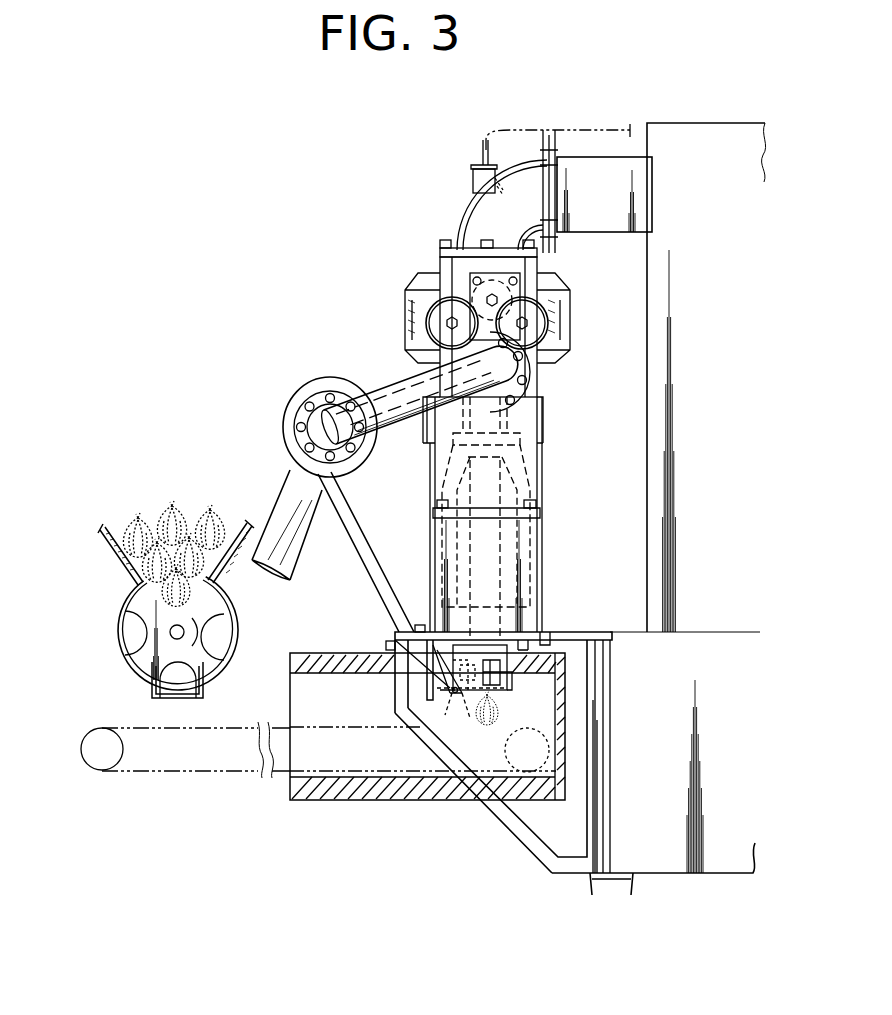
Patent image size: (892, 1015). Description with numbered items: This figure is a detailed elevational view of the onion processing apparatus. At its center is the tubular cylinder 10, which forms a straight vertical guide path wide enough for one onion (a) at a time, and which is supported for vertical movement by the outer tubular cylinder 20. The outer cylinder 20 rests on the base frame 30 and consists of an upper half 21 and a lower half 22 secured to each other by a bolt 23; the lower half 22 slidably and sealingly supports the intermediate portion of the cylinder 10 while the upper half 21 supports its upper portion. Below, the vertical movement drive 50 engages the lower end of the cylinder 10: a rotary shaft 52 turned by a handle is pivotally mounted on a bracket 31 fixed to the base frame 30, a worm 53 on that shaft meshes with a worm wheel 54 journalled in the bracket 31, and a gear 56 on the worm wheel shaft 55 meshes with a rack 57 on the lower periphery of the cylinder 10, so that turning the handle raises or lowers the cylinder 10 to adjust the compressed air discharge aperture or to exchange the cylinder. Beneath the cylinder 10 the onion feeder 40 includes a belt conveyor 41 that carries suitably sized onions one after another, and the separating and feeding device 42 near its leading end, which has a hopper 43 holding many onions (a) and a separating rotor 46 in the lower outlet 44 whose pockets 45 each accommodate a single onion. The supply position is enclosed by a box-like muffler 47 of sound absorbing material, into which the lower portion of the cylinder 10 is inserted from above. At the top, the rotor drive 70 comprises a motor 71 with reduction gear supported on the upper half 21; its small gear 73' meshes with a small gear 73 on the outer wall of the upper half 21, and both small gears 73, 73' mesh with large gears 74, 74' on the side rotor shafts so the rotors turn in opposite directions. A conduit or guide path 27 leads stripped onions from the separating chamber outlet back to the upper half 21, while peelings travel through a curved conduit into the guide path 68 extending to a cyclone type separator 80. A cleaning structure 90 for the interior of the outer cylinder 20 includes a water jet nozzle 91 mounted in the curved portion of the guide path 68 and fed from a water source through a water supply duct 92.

The cyclone type separator 80 is at (720, 122).
The guide path 68 is at (606, 157).
The water supply duct 92 is at (535, 125).
The cleaning structure 90 is at (476, 152).
The water jet nozzle 91 is at (473, 180).
The rotor drive 70 is at (538, 298).
The motor 71 is at (480, 298).
The small gear 73 is at (434, 293).
The small gear 73' is at (551, 293).
The large gear 74 is at (403, 316).
The large gear 74' is at (582, 318).
The conduit or guide path 27 is at (394, 388).
The hopper 43 is at (216, 575).
The base frame 30 is at (608, 630).
The outer tubular cylinder 20 is at (548, 535).
The upper half of the outer cylinder 21 is at (545, 458).
The lower half of the outer cylinder 22 is at (545, 555).
The bolt 23 is at (545, 506).
The tubular cylinder 10 is at (545, 588).
The worm wheel 54 is at (442, 640).
The worm wheel shaft 55 is at (522, 642).
The gear 56 is at (547, 633).
The muffler 47 is at (340, 653).
The belt conveyor 41 is at (313, 725).
The onion feeder 40 is at (248, 715).
The onion separating and feeding device 42 is at (120, 590).
The onion a is at (188, 512).
The pocket 45 is at (224, 626).
The separating rotor 46 is at (140, 658).
The lower outlet 44 is at (165, 688).
The bracket 31 is at (430, 665).
The vertical movement drive 50 is at (447, 684).
The worm 53 is at (430, 720).
The rotary shaft 52 is at (465, 700).
The rack 57 is at (505, 690).